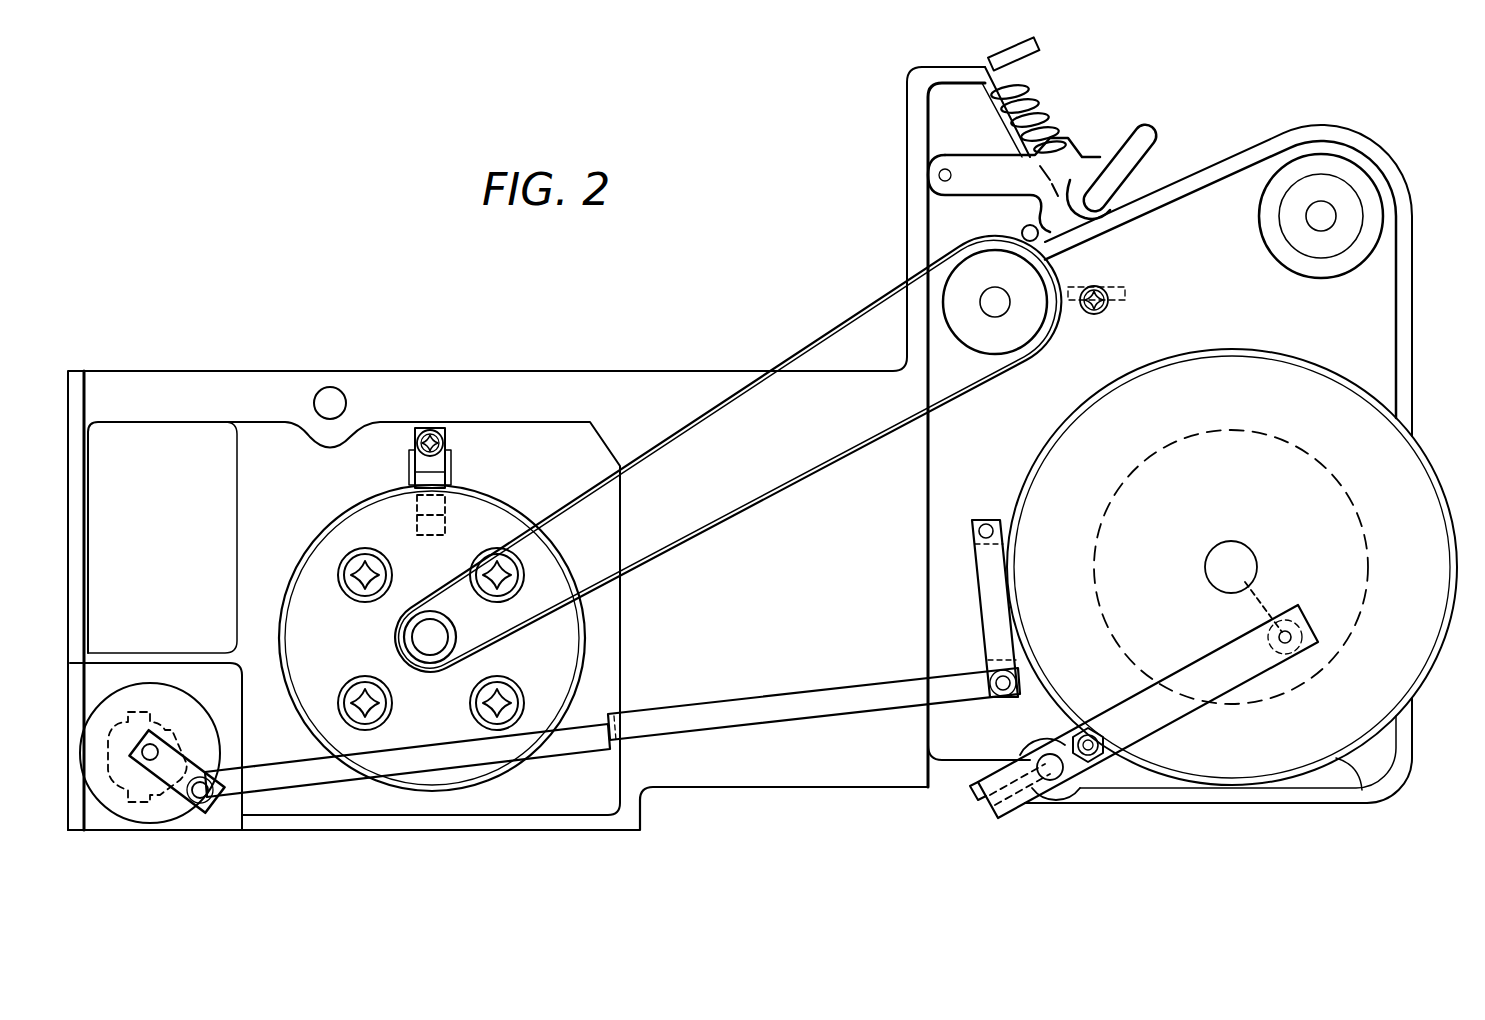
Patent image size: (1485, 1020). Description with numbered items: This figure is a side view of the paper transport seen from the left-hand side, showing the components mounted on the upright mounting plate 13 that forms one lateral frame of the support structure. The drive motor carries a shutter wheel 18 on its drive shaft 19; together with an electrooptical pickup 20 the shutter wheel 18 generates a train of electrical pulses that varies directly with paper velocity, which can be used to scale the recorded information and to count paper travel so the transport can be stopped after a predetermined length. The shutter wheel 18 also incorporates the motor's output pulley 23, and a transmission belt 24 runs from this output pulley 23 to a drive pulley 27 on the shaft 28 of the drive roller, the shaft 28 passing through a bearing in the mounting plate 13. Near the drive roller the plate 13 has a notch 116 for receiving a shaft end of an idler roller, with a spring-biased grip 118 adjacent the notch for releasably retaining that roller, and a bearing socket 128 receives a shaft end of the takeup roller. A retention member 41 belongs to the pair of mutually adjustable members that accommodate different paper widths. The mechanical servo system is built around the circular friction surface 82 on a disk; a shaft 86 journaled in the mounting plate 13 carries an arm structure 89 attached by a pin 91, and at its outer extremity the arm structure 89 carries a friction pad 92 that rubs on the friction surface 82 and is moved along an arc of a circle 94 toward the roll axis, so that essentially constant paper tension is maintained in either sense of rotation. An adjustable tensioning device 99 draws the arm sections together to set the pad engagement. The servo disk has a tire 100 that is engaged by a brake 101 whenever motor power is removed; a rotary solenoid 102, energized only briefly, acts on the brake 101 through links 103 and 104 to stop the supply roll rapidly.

The upright mounting plate 13 is at (664, 373).
The shutter wheel 18 is at (314, 532).
The drive shaft 19 is at (412, 638).
The electrooptical pickup 20 is at (412, 478).
The output pulley 23 is at (425, 664).
The transmission belt 24 is at (678, 438).
The drive pulley 27 is at (1035, 328).
The shaft 28 is at (992, 288).
The retention member 41 is at (1305, 450).
The friction surface 82 is at (1405, 470).
The shaft 86 is at (1062, 780).
The arm structure 89 is at (1190, 660).
The pin 91 is at (972, 808).
The friction pad 92 is at (1300, 610).
The arc of a circle 94 is at (1260, 588).
The adjustable tensioning device 99 is at (1095, 730).
The tire 100 is at (1356, 795).
The brake 101 is at (988, 626).
The rotary solenoid 102 is at (128, 688).
The link 103 is at (200, 750).
The link 104 is at (790, 692).
The notch 116 is at (1024, 225).
The operating handle 118 is at (1115, 170).
The bearing socket 128 is at (1298, 238).